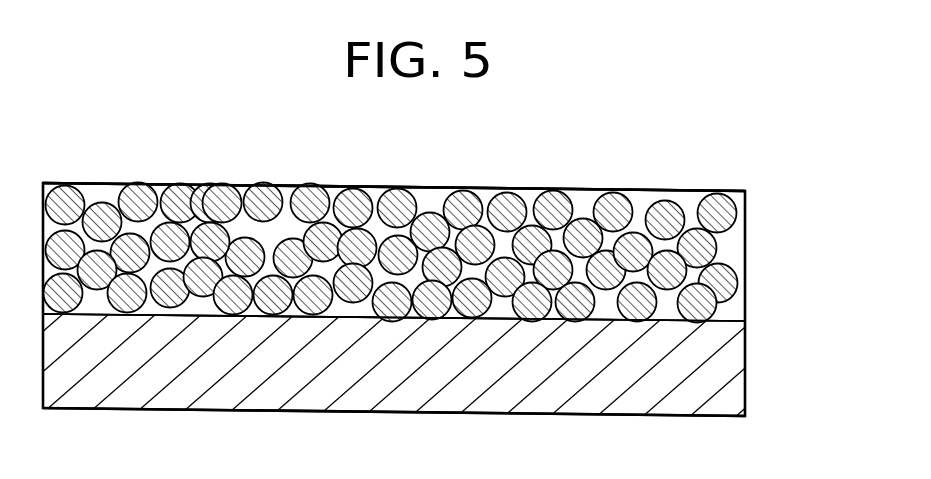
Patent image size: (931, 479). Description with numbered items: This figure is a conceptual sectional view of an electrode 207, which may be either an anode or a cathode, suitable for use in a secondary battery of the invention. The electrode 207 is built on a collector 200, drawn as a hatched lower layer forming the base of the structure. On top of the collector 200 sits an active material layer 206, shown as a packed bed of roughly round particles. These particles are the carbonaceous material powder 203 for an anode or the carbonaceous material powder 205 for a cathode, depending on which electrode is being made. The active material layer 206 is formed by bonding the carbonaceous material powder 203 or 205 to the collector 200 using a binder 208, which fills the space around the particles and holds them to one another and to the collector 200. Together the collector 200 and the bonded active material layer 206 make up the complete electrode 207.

The collector 200 is at (407, 405).
The carbonaceous material powder for an anode 203 is at (391, 227).
The carbonaceous material powder for a cathode 205 is at (210, 186).
The active material layer 206 is at (758, 317).
The electrode 207 is at (787, 422).
The binder 208 is at (432, 198).